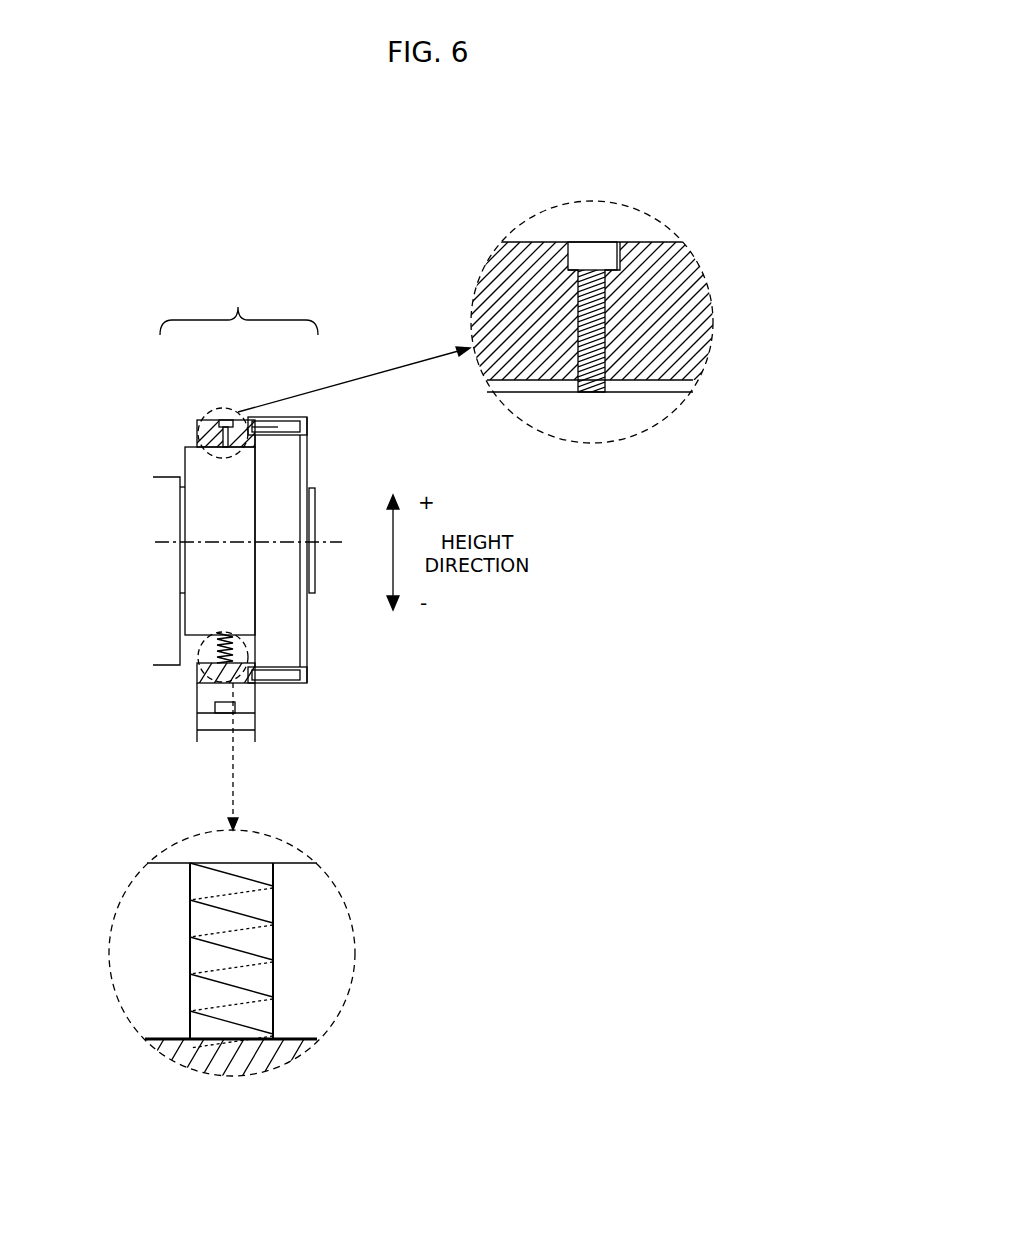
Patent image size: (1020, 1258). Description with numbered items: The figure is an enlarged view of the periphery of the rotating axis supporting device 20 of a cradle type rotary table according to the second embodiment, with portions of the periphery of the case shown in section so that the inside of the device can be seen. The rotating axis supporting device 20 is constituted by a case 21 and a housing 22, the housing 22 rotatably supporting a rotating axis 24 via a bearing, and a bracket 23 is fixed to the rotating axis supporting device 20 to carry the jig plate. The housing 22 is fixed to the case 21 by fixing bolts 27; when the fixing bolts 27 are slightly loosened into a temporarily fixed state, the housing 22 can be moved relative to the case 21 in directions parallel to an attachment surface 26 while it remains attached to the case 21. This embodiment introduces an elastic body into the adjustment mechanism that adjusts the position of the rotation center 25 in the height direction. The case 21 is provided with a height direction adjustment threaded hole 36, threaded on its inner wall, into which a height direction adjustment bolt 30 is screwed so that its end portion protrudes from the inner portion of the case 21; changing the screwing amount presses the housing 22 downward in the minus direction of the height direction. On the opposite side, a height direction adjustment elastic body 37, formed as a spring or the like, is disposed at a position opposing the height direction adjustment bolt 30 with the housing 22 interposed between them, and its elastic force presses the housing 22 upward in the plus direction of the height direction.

The rotating axis supporting device 20 is at (239, 306).
The case 21 is at (203, 688).
The housing 22 is at (290, 600).
The bracket 23 is at (160, 490).
The rotating axis 24 is at (313, 492).
The rotation center 25 is at (157, 542).
The attachment surface 26 is at (260, 440).
The fixing bolts 27 is at (308, 432).
The height direction adjustment bolt 30 is at (237, 412).
The height direction adjustment threaded hole 36 is at (577, 350).
The height direction adjustment elastic body 37 is at (213, 653).